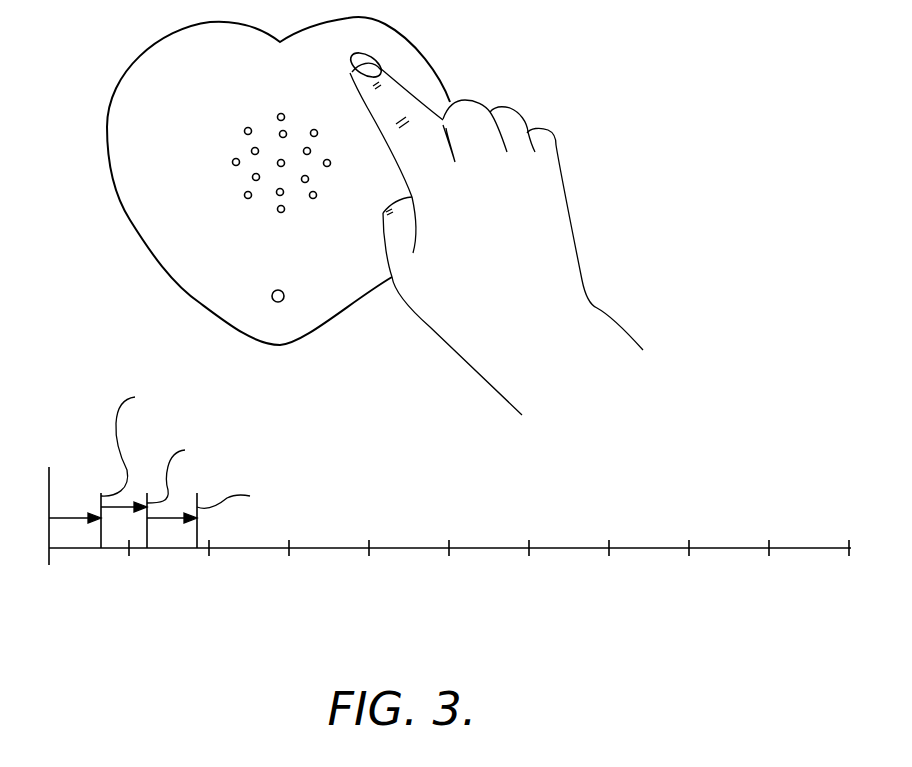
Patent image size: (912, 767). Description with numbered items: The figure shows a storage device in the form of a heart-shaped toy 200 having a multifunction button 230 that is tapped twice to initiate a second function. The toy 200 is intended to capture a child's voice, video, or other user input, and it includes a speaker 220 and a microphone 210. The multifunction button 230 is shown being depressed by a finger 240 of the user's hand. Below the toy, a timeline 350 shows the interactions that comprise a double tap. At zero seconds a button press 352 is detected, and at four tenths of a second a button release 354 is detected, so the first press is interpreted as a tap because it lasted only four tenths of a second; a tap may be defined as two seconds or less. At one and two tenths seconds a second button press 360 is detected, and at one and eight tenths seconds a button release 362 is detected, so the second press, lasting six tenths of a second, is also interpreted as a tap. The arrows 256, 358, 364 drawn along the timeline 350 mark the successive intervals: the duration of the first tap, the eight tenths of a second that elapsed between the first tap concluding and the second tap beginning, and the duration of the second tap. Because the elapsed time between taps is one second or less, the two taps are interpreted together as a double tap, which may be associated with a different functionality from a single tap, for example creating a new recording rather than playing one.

The heart-shaped toy 200 is at (113, 80).
The microphone 210 is at (277, 288).
The speaker 220 is at (208, 152).
The multifunction button 230 is at (350, 70).
The finger 240 is at (542, 130).
The timeline 350 is at (736, 500).
The button press 352 is at (49, 390).
The button release 354 is at (179, 360).
The second button press 360 is at (238, 413).
The button release 362 is at (296, 468).
The first time interval 256 is at (73, 521).
The second time interval 358 is at (118, 509).
The third time interval 364 is at (170, 521).